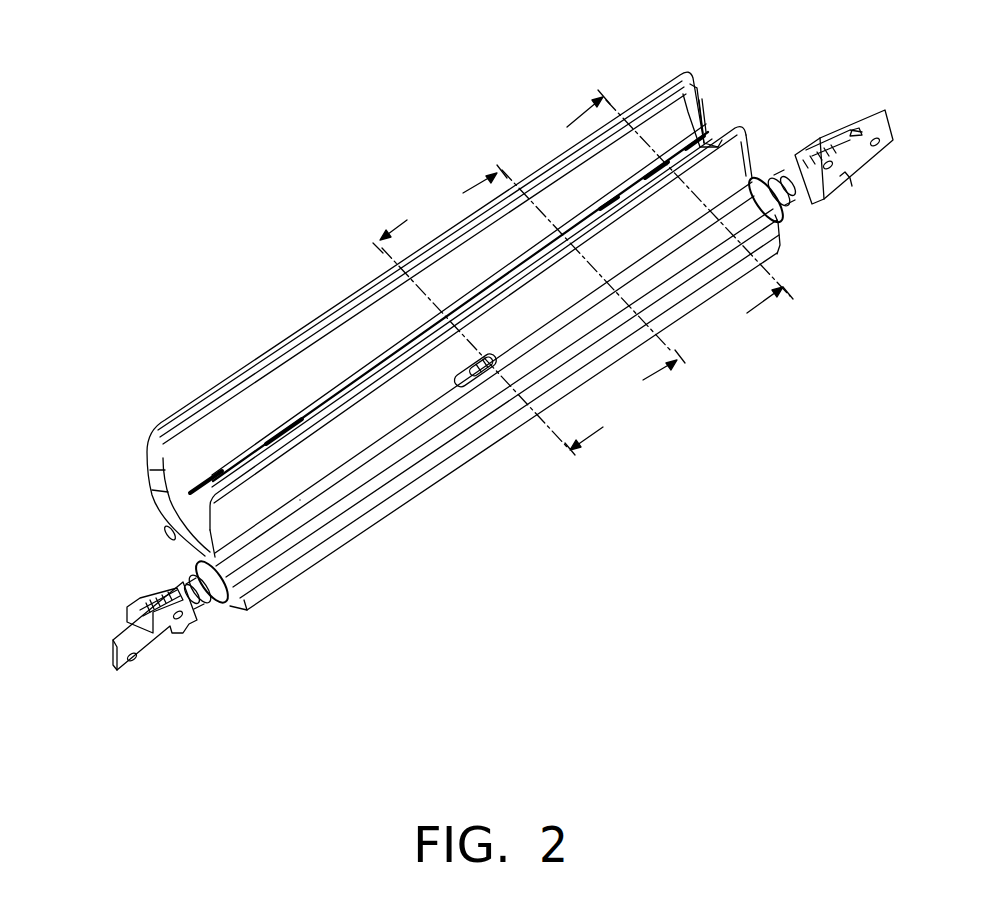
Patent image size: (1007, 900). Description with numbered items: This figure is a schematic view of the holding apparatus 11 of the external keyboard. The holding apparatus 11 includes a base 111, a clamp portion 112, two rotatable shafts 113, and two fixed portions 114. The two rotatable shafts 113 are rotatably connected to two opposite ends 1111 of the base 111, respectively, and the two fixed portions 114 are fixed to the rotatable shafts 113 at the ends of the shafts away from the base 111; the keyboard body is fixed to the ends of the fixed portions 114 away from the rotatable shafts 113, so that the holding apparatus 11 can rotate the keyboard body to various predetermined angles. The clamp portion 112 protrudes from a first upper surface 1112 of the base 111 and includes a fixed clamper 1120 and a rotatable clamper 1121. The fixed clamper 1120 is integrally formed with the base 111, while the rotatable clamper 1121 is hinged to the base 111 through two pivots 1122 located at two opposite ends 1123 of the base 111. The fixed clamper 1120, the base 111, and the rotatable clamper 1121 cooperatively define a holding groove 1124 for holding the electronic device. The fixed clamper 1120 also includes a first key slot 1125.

The holding apparatus 11 is at (247, 198).
The base 111 is at (273, 570).
The opposite ends of the base 1111 is at (240, 607).
The first upper surface 1112 is at (392, 462).
The clamp portion 112 is at (758, 14).
The fixed clamper 1120 is at (720, 133).
The rotatable clamper 1121 is at (675, 73).
The pivots 1122 is at (166, 534).
The opposite ends of the base 1123 is at (703, 113).
The holding groove 1124 is at (262, 445).
The first key slot 1125 is at (457, 393).
The rotatable shafts 113 is at (200, 595).
The fixed portions 114 is at (150, 645).